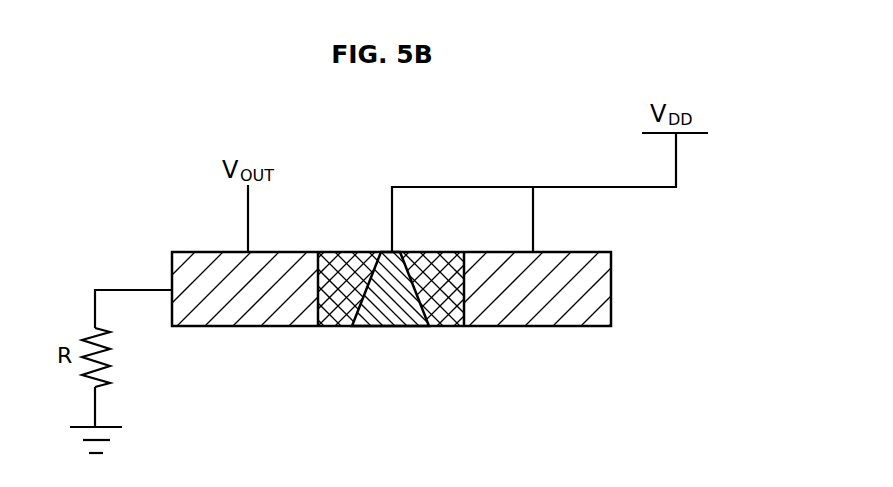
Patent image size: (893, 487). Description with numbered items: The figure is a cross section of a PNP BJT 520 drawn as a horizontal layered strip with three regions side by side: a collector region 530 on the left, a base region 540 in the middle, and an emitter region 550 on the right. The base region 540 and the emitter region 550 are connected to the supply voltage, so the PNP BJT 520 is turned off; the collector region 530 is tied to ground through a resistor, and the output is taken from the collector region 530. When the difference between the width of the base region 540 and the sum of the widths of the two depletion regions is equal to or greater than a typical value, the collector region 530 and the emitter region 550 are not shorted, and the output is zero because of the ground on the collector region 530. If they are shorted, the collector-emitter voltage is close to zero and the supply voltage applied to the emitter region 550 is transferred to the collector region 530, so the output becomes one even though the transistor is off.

The PNP BJT 520 is at (372, 129).
The collector region 530 is at (249, 315).
The base region 540 is at (393, 315).
The emitter region 550 is at (540, 315).